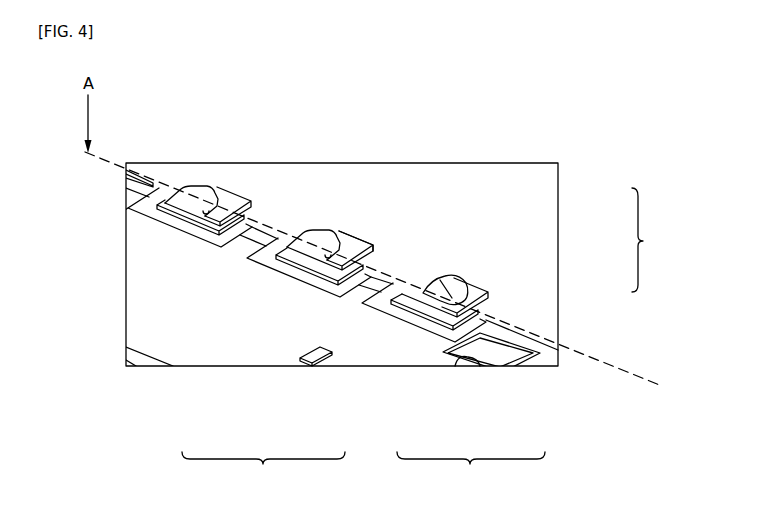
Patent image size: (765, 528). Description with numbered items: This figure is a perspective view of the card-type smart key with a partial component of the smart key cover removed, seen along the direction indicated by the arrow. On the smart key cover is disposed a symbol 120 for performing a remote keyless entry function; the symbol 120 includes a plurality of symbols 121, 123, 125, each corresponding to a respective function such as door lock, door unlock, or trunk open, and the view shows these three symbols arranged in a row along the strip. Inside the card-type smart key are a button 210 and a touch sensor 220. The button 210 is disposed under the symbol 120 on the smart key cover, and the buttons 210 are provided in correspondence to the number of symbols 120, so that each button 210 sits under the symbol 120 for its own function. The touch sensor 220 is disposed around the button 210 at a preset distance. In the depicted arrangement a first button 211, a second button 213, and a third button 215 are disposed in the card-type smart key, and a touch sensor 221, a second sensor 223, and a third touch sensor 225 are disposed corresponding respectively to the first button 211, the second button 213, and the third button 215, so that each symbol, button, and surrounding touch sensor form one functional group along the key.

The symbol 120 is at (653, 240).
The symbol 121 is at (452, 287).
The symbol 123 is at (357, 252).
The symbol 125 is at (230, 203).
The button 210 is at (471, 472).
The first button 211 is at (462, 318).
The second button 213 is at (220, 217).
The third button 215 is at (380, 305).
The touch sensor 220 is at (263, 472).
The touch sensor 221 is at (455, 339).
The second sensor 223 is at (283, 273).
The third touch sensor 225 is at (195, 230).